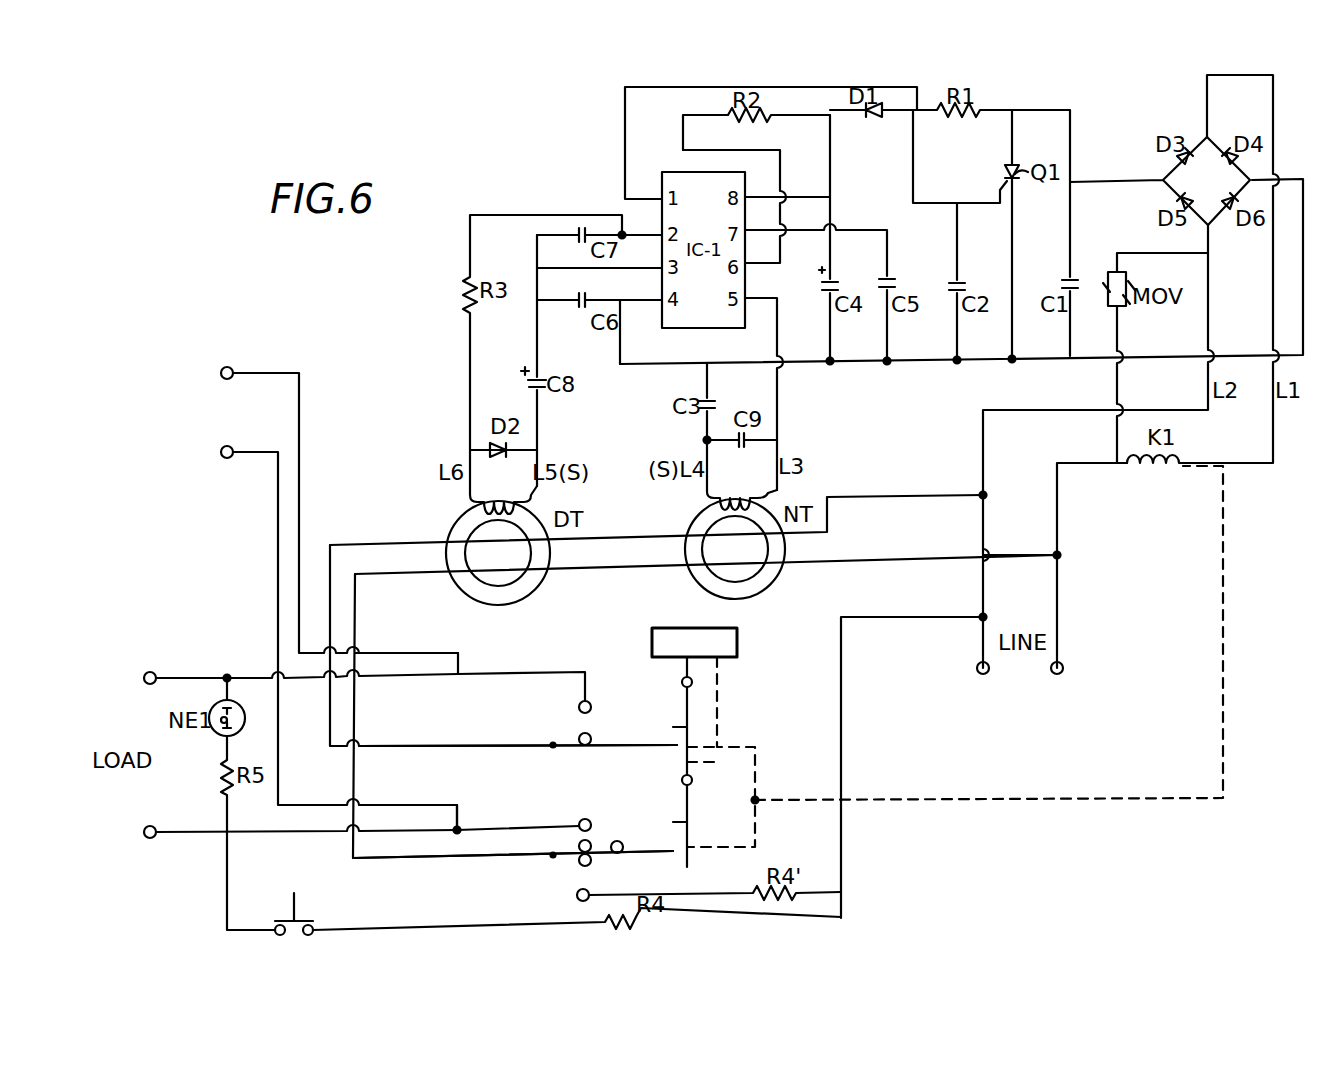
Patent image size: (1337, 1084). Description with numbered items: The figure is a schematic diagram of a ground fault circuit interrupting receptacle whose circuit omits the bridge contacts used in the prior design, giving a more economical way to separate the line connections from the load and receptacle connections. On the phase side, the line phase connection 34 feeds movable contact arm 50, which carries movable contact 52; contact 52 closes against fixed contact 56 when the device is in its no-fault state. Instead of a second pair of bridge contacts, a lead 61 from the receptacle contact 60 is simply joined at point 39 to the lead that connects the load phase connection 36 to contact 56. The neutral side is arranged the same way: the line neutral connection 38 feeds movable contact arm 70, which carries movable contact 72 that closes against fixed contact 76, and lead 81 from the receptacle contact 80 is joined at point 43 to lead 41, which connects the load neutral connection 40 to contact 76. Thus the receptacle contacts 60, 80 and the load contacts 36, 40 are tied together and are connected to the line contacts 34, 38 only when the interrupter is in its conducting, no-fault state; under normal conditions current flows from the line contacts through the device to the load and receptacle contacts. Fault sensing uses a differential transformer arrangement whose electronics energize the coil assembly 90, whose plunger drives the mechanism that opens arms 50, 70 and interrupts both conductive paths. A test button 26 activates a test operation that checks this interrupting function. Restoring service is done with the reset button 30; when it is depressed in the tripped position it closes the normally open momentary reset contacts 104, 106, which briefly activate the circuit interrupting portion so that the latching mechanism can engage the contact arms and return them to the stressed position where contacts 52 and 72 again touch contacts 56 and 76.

The test button 26 is at (323, 910).
The reset button 30 is at (750, 644).
The line phase connection 34 is at (1063, 668).
The load phase connection 36 is at (152, 838).
The line neutral connection 38 is at (977, 668).
The connection point 39 is at (457, 834).
The load neutral connection 40 is at (156, 673).
The lead 41 is at (406, 678).
The connection point 43 is at (462, 670).
The contact arm 50 is at (669, 855).
The movable contact 52 is at (579, 845).
The fixed contact 56 is at (579, 822).
The receptacle contact 60 is at (221, 454).
The lead 61 is at (432, 805).
The contact arm 70 is at (656, 746).
The movable contact 72 is at (579, 736).
The fixed contact 76 is at (579, 705).
The receptacle contact 80 is at (222, 369).
The lead 81 is at (418, 650).
The coil assembly 90 is at (1160, 471).
The momentary reset contact 104 is at (579, 861).
The momentary reset contact 106 is at (577, 898).